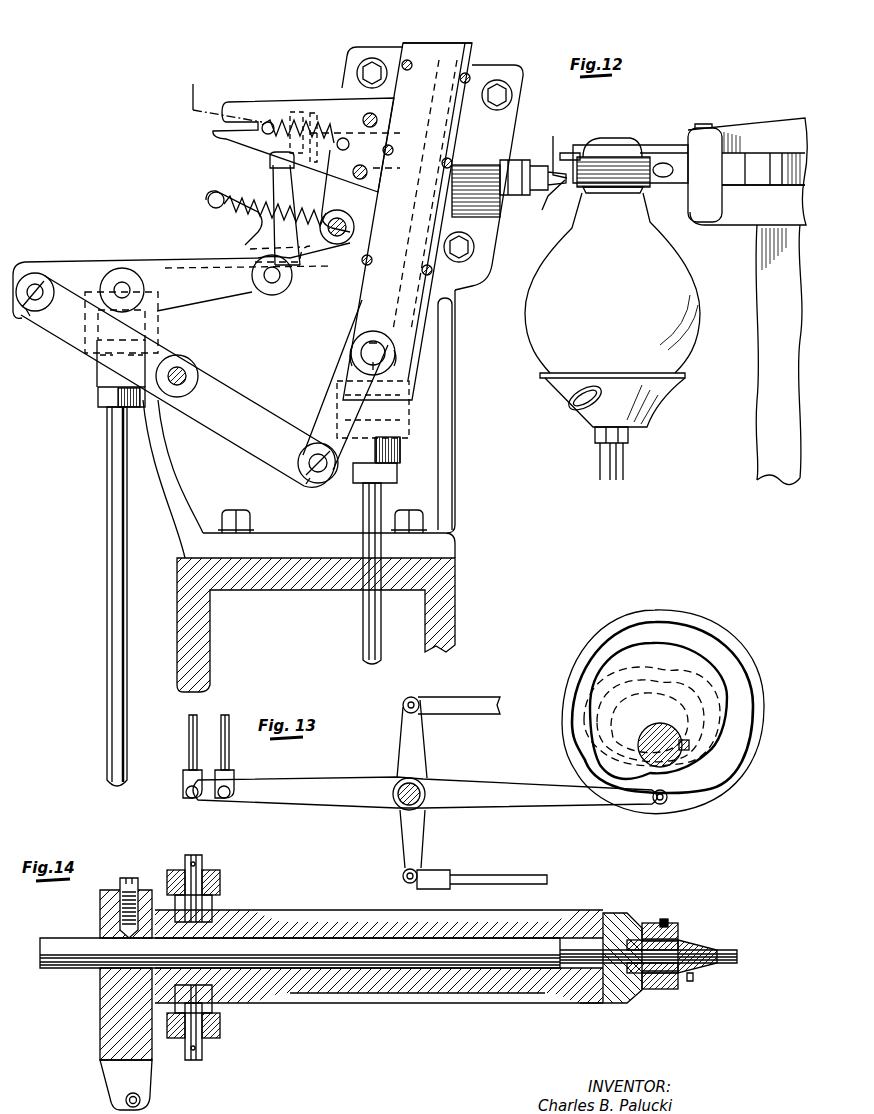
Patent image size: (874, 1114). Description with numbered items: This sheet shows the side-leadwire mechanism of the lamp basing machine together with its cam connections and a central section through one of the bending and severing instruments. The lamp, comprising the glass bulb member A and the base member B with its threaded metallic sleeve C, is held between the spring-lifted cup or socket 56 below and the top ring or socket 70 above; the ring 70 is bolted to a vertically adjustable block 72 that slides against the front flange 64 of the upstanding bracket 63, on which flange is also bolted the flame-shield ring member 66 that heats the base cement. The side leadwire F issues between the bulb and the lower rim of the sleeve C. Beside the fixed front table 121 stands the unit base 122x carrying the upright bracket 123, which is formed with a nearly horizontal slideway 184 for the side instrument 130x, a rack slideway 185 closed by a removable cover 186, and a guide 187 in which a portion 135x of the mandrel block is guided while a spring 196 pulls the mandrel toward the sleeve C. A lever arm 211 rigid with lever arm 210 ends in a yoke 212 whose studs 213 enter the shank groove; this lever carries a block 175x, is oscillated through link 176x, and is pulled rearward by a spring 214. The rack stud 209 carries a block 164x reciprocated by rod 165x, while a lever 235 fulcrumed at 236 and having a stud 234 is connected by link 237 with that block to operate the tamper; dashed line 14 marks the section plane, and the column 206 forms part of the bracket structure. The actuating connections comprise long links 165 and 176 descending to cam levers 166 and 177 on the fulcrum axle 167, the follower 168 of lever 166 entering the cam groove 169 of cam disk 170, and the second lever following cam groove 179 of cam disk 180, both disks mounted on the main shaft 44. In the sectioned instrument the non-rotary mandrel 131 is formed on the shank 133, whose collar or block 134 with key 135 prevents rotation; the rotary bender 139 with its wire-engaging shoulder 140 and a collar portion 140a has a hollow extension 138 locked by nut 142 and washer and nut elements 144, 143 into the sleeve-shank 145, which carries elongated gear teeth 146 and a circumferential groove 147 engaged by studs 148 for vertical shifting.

In FIG. 12, the section line 14 is at (375, 122).
In FIG. 12, the guided portion of block 135x is at (262, 125).
In FIG. 12, the studs 213 is at (300, 112).
In FIG. 12, the upright bracket 123 is at (358, 84).
In FIG. 12, the rack slideway 185 is at (458, 60).
In FIG. 12, the guide 187 is at (356, 117).
In FIG. 12, the removable cover 186 is at (407, 221).
In FIG. 12, the slideway 184 is at (416, 177).
In FIG. 12, the side bending and severing instrument 130x is at (530, 165).
In FIG. 12, the spring 196 is at (342, 171).
In FIG. 12, the yoke 212 is at (270, 162).
In FIG. 14, the yoke 212 is at (222, 1030).
In FIG. 12, the lever arm 211 is at (278, 186).
In FIG. 12, the spring 214 is at (250, 210).
In FIG. 12, the fulcrum 236 is at (36, 273).
In FIG. 12, the lever arm 210 is at (230, 297).
In FIG. 12, the stud 209 is at (357, 358).
In FIG. 12, the column 206 is at (430, 287).
In FIG. 12, the block 164x is at (397, 363).
In FIG. 12, the block 175x is at (158, 318).
In FIG. 12, the stud 234 is at (192, 381).
In FIG. 12, the link 237 is at (330, 410).
In FIG. 12, the lever 235 is at (179, 381).
In FIG. 12, the base 122x is at (299, 479).
In FIG. 12, the link 176x is at (107, 576).
In FIG. 12, the rod 165x is at (364, 626).
In FIG. 12, the fixed front table 121 is at (455, 600).
In FIG. 12, the top ring or socket 70 is at (657, 150).
In FIG. 12, the vertically adjustable block 72 is at (747, 171).
In FIG. 12, the ring member 66 is at (686, 185).
In FIG. 12, the front flange 64 is at (763, 197).
In FIG. 12, the upstanding bracket 63 is at (779, 355).
In FIG. 12, the cup, ring or socket 56 is at (612, 426).
In FIG. 12, the glass container or bulb member A is at (612, 283).
In FIG. 12, the base member B is at (630, 194).
In FIG. 12, the screw threaded metallic sleeve C is at (598, 192).
In FIG. 12, the side leadwire F is at (553, 205).
In FIG. 13, the long link 176 is at (189, 742).
In FIG. 13, the long link 165 is at (230, 750).
In FIG. 13, the cam lever 177 is at (213, 800).
In FIG. 13, the fixed stud or fulcrum axle 167 is at (428, 790).
In FIG. 13, the cam lever 166 is at (365, 806).
In FIG. 13, the cam disk 170 is at (582, 645).
In FIG. 13, the cam groove 169 is at (586, 690).
In FIG. 13, the cam disk 180 is at (668, 675).
In FIG. 13, the cam groove 179 is at (700, 700).
In FIG. 13, the main shaft 44 is at (650, 735).
In FIG. 13, the follower 168 is at (663, 806).
In FIG. 14, the shank 133 is at (62, 936).
In FIG. 14, the collar or block 134 is at (100, 1002).
In FIG. 14, the projection or key 135 is at (118, 1083).
In FIG. 14, the studs 148 is at (222, 894).
In FIG. 14, the circumferential groove 147 is at (244, 914).
In FIG. 14, the sleeve-shank 145 is at (345, 1000).
In FIG. 14, the gear teeth 146 is at (442, 1004).
In FIG. 14, the hollow extension 138 is at (598, 1004).
In FIG. 14, the locknut 142 is at (639, 918).
In FIG. 14, the pin 140a is at (668, 921).
In FIG. 14, the rotary bender 139 is at (688, 945).
In FIG. 14, the mandrel 131 is at (738, 955).
In FIG. 14, the shoulder 140 is at (693, 978).
In FIG. 14, the washer 144 is at (662, 990).
In FIG. 14, the nut 143 is at (652, 992).